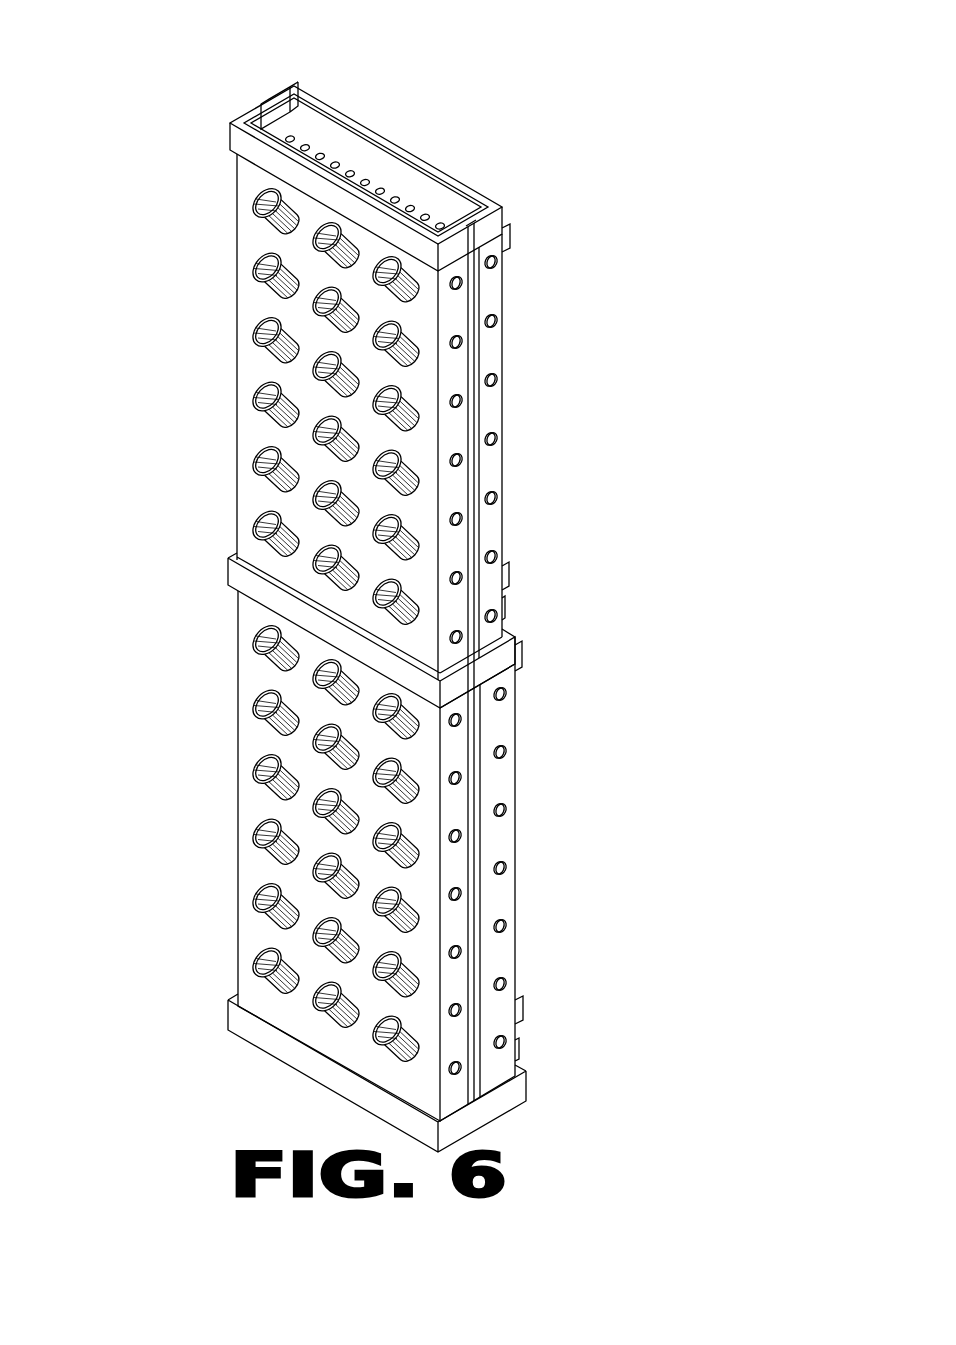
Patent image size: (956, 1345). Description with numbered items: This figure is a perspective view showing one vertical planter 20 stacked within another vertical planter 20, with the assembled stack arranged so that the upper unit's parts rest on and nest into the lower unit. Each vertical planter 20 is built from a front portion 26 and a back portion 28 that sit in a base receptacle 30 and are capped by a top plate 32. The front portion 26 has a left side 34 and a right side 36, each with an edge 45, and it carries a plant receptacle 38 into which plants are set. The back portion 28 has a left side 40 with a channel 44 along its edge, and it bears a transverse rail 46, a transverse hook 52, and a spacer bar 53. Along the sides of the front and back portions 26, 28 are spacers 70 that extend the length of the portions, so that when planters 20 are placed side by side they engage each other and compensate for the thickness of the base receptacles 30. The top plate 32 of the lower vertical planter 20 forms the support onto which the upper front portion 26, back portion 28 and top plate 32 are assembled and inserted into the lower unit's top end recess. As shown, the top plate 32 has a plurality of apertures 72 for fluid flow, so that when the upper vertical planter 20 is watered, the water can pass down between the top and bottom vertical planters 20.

The vertical planter 20 is at (347, 565).
The front portion 26 is at (233, 300).
The back portion 28 is at (443, 158).
The base receptacle 30 is at (256, 1046).
The top plate 32 is at (377, 176).
The left side of front portion 34 is at (252, 121).
The right side of front portion 36 is at (458, 309).
The plant receptacle 38 is at (262, 532).
The left side of back portion 40 is at (496, 345).
The channel 44 is at (272, 99).
The edge 45 is at (260, 104).
The transverse rail 46 is at (506, 608).
The transverse hook 52 is at (512, 232).
The spacer bar 53 is at (509, 578).
The spacer 70 is at (491, 432).
The aperture 72 is at (306, 148).